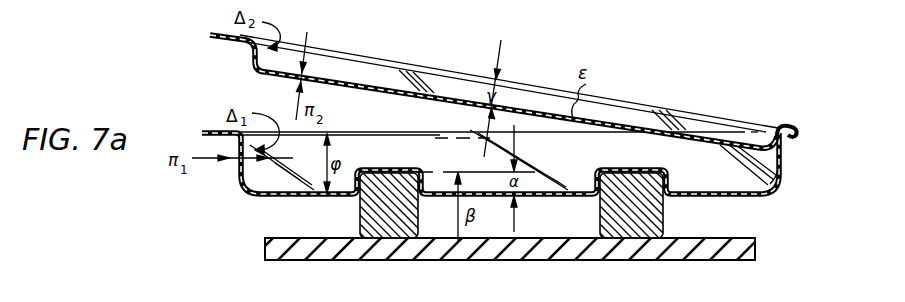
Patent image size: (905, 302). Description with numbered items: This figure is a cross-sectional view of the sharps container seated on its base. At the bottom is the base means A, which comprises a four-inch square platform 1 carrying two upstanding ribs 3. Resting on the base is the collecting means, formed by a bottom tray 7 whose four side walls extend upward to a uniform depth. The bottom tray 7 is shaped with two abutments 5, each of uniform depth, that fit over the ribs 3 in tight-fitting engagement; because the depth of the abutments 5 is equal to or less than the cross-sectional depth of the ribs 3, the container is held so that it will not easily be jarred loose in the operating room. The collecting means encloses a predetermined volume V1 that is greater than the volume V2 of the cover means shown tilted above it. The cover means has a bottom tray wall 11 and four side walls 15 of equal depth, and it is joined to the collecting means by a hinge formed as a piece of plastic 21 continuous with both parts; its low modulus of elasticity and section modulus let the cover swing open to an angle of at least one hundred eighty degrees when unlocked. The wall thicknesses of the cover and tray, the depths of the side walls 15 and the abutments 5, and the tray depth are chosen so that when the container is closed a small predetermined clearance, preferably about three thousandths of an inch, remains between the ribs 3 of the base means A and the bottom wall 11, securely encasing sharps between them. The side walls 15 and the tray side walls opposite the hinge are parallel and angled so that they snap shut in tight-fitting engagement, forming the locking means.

The platform 1 is at (397, 250).
The ribs 3 is at (640, 215).
The abutments 5 is at (382, 169).
The bottom tray 7 is at (300, 197).
The bottom tray wall 11 is at (264, 77).
The side walls 15 is at (245, 49).
The piece of plastic 21 is at (798, 126).
The volume of collecting means V1 is at (767, 182).
The volume of cover means V2 is at (690, 112).
The base means A is at (585, 263).